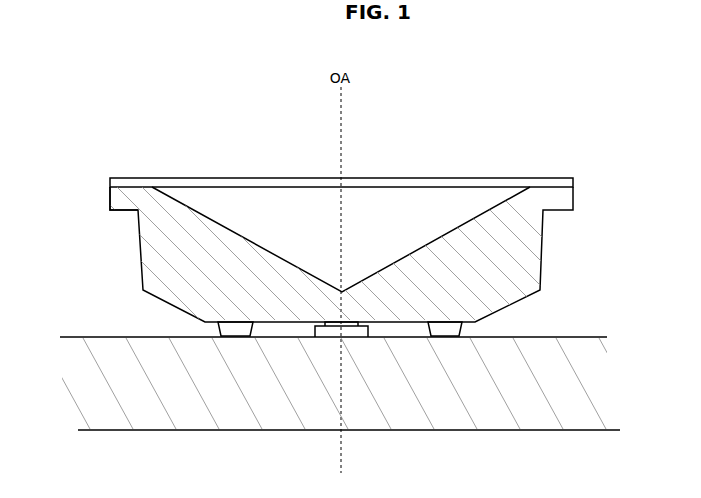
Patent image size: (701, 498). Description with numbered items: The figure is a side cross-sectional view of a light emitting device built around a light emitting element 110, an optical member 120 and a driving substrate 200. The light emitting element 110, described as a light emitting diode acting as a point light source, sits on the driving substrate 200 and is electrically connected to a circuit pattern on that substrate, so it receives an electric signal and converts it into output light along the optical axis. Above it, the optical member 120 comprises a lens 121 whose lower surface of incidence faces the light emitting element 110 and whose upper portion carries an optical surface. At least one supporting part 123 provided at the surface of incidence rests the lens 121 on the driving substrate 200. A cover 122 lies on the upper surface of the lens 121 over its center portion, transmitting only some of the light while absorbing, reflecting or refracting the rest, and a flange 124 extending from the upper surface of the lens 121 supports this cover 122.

The light emitting element 110 is at (332, 338).
The optical member 120 is at (396, 168).
The lens 121 is at (543, 235).
The cover 122 is at (575, 181).
The supporting part 123 is at (466, 333).
The flange 124 is at (110, 196).
The driving substrate 200 is at (466, 395).